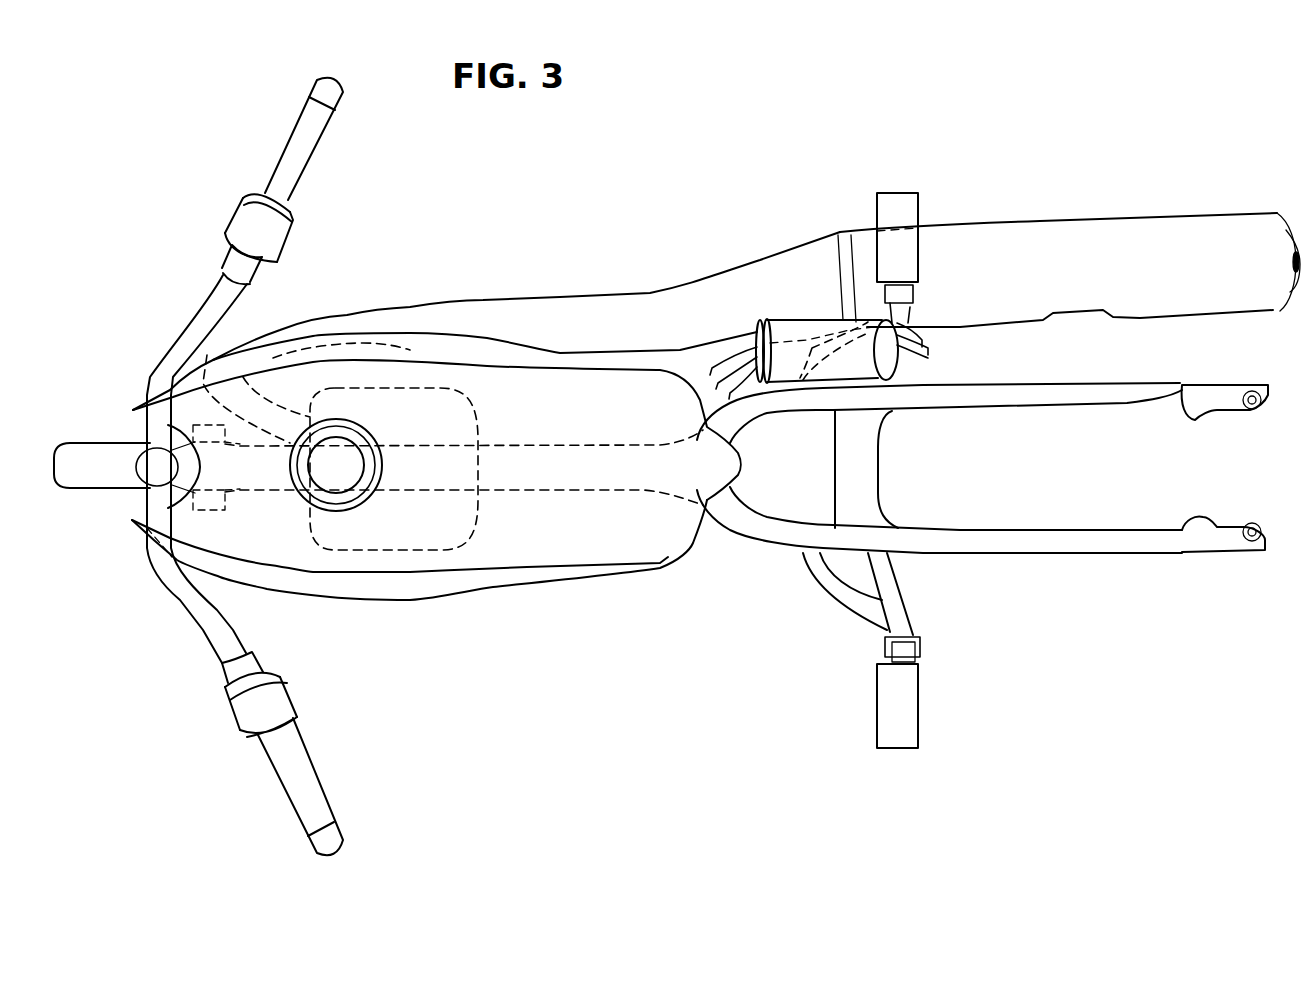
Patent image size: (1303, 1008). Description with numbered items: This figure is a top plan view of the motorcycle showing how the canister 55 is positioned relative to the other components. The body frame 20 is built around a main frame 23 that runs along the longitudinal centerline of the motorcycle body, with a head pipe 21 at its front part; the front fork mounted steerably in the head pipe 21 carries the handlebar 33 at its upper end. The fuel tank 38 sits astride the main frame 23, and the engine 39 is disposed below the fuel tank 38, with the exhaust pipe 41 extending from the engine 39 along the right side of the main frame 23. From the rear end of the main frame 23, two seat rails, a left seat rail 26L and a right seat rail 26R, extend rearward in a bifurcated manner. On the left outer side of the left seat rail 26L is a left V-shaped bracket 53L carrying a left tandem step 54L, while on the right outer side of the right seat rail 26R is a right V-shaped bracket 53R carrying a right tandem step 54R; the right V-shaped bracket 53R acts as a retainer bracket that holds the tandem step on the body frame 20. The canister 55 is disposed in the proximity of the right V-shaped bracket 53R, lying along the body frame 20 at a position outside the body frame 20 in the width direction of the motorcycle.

The body frame 20 is at (970, 497).
The head pipe 21 is at (107, 490).
The main frame 23 is at (540, 490).
The right seat rail 26R is at (1043, 387).
The left seat rail 26L is at (1050, 557).
The handlebar 33 is at (188, 322).
The fuel tank 38 is at (495, 397).
The engine 39 is at (397, 553).
The exhaust pipe 41 is at (587, 297).
The right V-shaped bracket 53R is at (812, 348).
The left V-shaped bracket 53L is at (850, 607).
The right tandem step 54R is at (900, 200).
The left tandem step 54L is at (922, 720).
The canister 55 is at (757, 333).